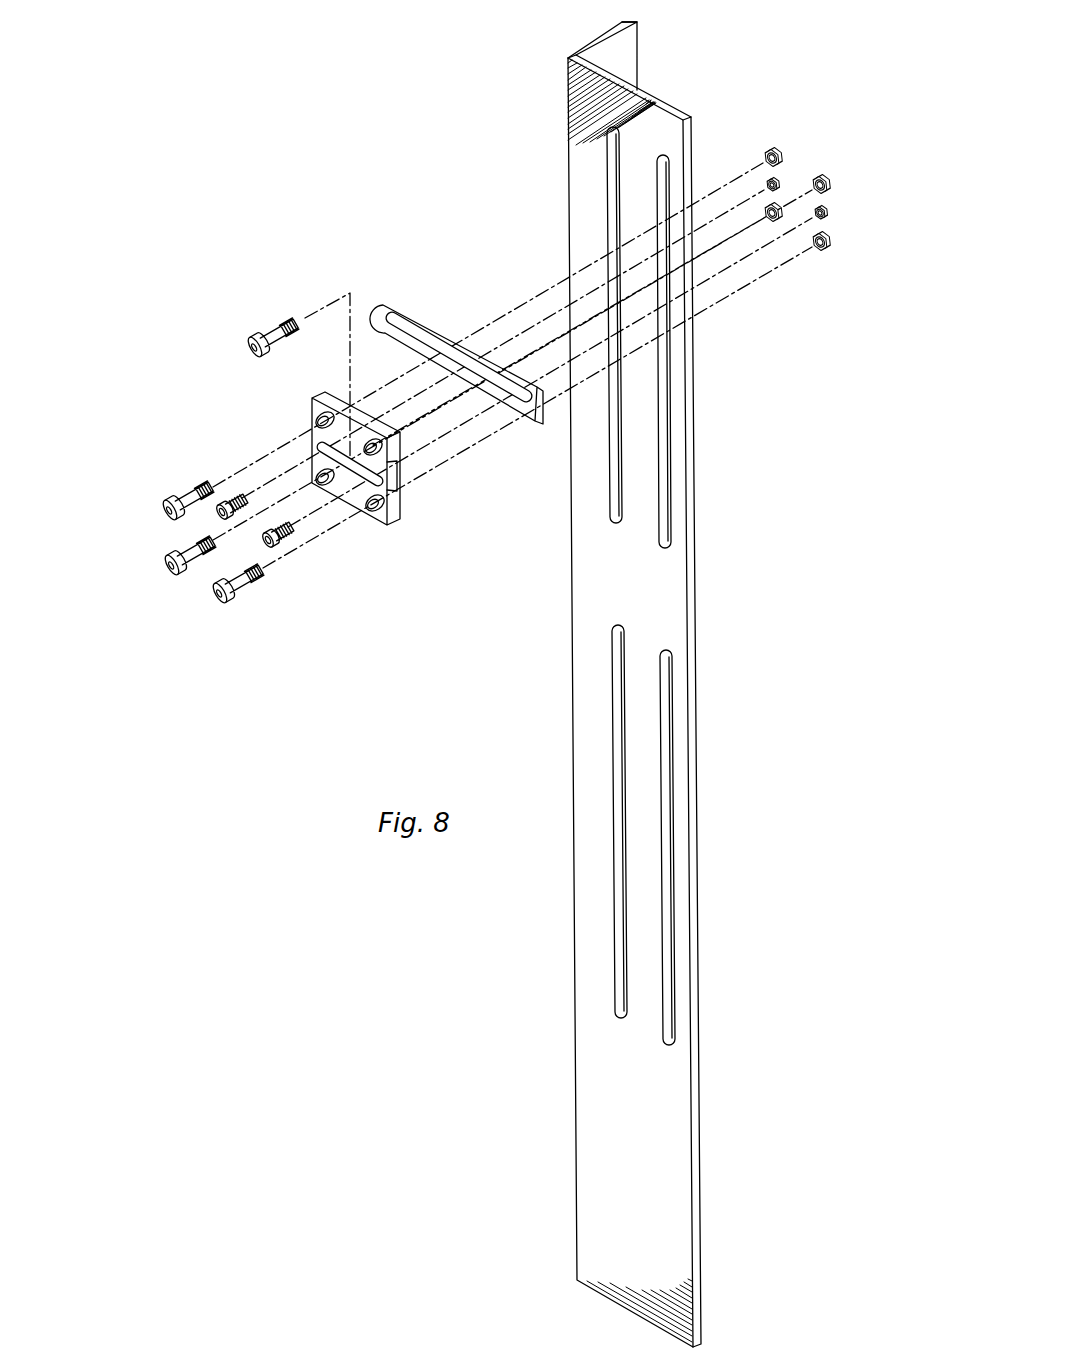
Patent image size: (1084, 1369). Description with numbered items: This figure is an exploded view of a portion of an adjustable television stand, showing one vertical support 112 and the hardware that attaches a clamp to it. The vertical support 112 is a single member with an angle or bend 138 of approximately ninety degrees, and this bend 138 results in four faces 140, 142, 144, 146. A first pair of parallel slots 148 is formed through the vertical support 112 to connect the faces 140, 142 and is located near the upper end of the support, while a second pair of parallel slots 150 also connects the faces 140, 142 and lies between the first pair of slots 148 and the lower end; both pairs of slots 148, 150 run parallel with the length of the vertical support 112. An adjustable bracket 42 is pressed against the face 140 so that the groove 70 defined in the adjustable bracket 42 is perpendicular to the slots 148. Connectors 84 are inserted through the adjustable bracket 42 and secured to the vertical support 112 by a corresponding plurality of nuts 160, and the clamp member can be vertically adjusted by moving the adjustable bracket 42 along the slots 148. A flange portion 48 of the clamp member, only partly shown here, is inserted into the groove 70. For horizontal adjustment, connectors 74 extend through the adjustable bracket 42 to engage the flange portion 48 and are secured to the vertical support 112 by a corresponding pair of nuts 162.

The vertical support 112 is at (756, 667).
The bend 138 is at (577, 1283).
The face 140 is at (583, 608).
The face 142 is at (700, 478).
The face 144 is at (634, 72).
The face 146 is at (625, 22).
The first pair of parallel slots 148 is at (657, 205).
The second pair of parallel slots 150 is at (663, 915).
The nuts 160 is at (774, 150).
The nuts 162 is at (781, 186).
The adjustable bracket 42 is at (310, 412).
The flange portion 48 is at (428, 322).
The groove 70 is at (405, 482).
The connectors 74 is at (215, 515).
The connectors 84 is at (266, 336).